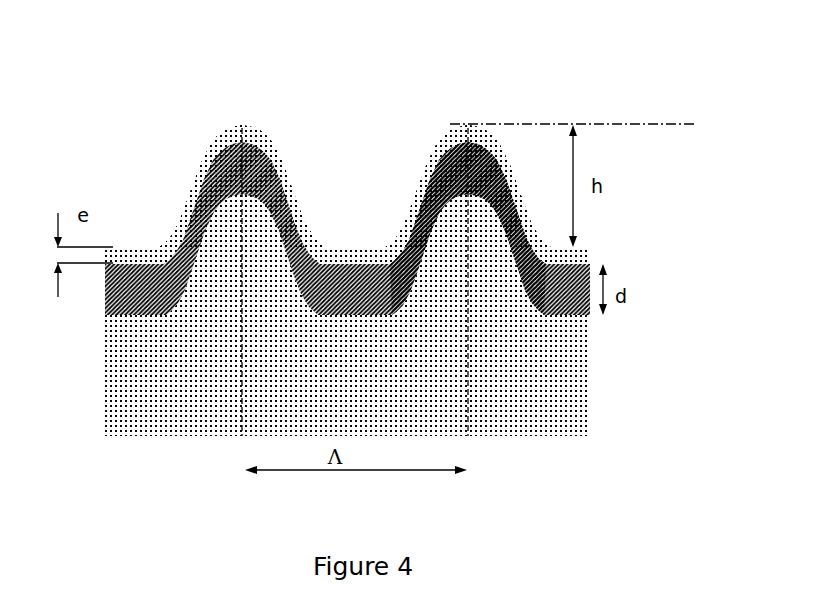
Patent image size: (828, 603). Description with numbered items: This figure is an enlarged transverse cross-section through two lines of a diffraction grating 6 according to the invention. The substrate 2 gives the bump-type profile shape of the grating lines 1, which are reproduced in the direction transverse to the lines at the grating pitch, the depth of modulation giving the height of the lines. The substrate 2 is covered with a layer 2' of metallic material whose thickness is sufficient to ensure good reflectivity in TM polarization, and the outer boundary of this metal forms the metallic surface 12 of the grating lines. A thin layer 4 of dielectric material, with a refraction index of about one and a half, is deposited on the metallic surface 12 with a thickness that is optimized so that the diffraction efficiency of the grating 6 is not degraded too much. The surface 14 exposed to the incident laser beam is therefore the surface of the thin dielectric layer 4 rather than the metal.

The lines 1 is at (240, 141).
The substrate 2 is at (378, 280).
The layer of metallic material 2' is at (324, 252).
The thin layer of dielectric material 4 is at (588, 252).
The diffraction grating 6 is at (187, 207).
The metallic surface 12 is at (397, 240).
The surface exposed to the incident laser beam 14 is at (433, 148).